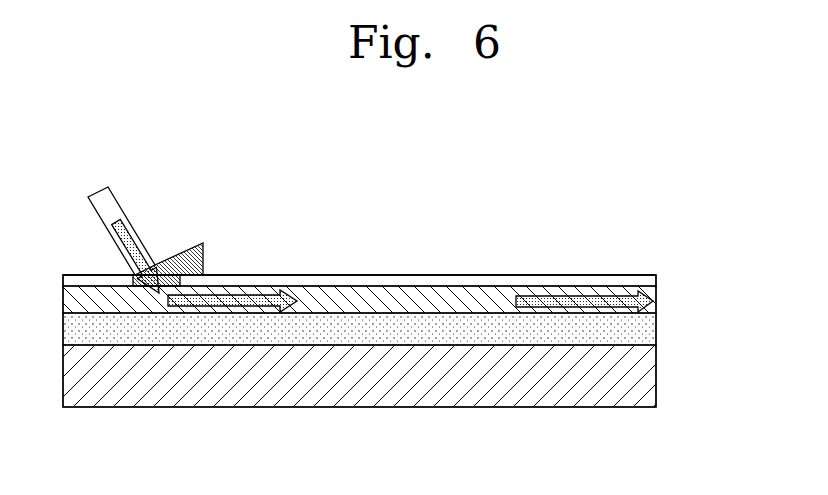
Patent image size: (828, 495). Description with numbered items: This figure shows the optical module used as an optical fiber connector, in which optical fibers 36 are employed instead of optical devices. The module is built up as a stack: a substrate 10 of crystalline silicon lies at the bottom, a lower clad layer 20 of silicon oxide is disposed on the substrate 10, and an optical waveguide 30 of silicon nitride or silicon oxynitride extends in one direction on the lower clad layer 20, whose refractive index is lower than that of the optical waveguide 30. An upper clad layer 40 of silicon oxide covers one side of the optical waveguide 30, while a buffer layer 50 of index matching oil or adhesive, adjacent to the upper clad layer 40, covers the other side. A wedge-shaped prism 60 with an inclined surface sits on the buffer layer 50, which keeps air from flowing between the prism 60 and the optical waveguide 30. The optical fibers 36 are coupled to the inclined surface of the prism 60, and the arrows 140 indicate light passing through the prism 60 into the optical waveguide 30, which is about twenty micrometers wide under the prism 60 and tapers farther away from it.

The substrate 10 is at (647, 373).
The lower clad layer 20 is at (647, 330).
The optical waveguide 30 is at (490, 292).
The upper clad layer 40 is at (374, 278).
The buffer layer 50 is at (82, 280).
The prism 60 is at (193, 242).
The optical fibers 36 is at (117, 202).
The light propagation direction 140 is at (577, 296).